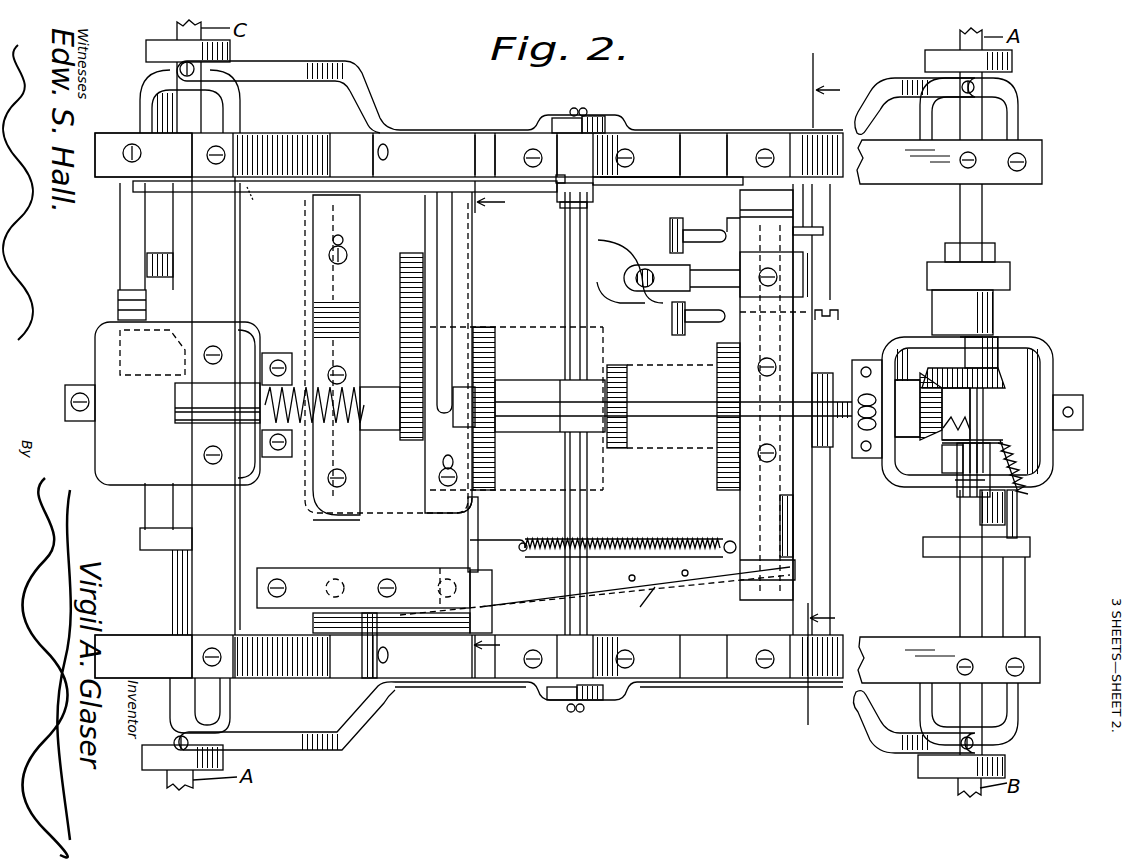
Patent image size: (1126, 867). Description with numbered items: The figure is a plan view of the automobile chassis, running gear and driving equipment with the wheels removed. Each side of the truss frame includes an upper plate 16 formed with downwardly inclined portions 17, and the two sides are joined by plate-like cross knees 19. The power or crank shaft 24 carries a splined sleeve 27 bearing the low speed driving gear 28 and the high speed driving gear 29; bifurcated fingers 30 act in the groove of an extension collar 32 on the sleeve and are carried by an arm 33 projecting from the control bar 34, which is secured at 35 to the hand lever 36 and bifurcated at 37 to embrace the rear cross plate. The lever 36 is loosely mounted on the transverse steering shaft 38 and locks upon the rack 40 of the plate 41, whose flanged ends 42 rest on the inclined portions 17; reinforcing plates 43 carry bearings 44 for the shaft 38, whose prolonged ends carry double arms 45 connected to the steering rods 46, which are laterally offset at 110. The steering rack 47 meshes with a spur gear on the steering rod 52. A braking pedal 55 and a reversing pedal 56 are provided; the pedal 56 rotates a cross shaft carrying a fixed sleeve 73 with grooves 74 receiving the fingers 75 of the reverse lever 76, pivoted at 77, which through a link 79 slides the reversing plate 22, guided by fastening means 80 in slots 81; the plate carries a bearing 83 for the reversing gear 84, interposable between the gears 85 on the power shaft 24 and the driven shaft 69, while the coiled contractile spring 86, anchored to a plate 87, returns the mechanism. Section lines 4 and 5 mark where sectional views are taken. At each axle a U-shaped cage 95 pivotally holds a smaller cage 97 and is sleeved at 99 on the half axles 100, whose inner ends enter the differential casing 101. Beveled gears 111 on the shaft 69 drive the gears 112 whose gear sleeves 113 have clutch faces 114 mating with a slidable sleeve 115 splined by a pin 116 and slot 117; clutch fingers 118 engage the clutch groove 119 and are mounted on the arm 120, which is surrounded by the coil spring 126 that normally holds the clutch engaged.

The section line 4— 4 is at (856, 86).
The section line 5— 5 is at (488, 429).
The upper truss plate 16 is at (112, 136).
The downwardly inclined portions 17 is at (308, 680).
The cross knees 19 is at (740, 203).
The sliding reversing plate 22 is at (330, 283).
The power shaft 24 is at (668, 410).
The sleeve 27 is at (527, 387).
The low speed driving gear 28 is at (615, 365).
The high speed driving gear 29 is at (487, 327).
The bifurcated fingers 30 is at (447, 423).
The extension collar 32 is at (467, 393).
The arm 33 is at (443, 280).
The control bar 34 is at (397, 192).
The securing point 35 is at (560, 204).
The hand lever 36 is at (593, 192).
The bifurcated end 37 is at (263, 206).
The transverse steering shaft 38 is at (580, 508).
The rack 40 is at (620, 180).
The control lever plate 41 is at (688, 157).
The angularly flanged ends 42 is at (393, 157).
The reinforcing plates 43 is at (507, 150).
The bearings 44 is at (580, 157).
The double arms 45 is at (578, 110).
The steering rods 46 is at (448, 130).
The steering rack 47 is at (600, 270).
The steering rod 52 is at (623, 290).
The braking pedal 55 is at (668, 233).
The reversing pedal 56 is at (670, 327).
The driven shaft 69 is at (847, 397).
The fixed sleeve 73 is at (807, 577).
The groove 74 is at (740, 590).
The fingers 75 is at (790, 557).
The reverse lever 76 is at (650, 607).
The pivot point 77 is at (283, 571).
The link 79 is at (377, 527).
The fastening means 80 is at (328, 255).
The slots 81 is at (335, 236).
The bearing 83 is at (337, 310).
The reversing gear 84 is at (400, 255).
The transmission gears 85 is at (390, 430).
The coiled contractile spring 86 is at (537, 537).
The plate 87 is at (480, 500).
The U-shaped cage 95 is at (962, 212).
The smaller cage 97 is at (970, 117).
The sleeves 99 is at (989, 303).
The half axles 100 is at (975, 337).
The differential casing 101 is at (1035, 367).
The lateral offset 110 is at (340, 52).
The beveled gears 111 is at (903, 427).
The bevel gears 112 is at (933, 368).
The gear sleeves 113 is at (965, 410).
The clutch faces 114 is at (972, 432).
The slidable clutch sleeve 115 is at (950, 450).
The pin 116 is at (957, 465).
The slot 117 is at (1012, 460).
The clutch fingers 118 is at (1003, 441).
The clutch groove 119 is at (942, 432).
The arm 120 is at (1020, 485).
The coil spring 126 is at (1023, 480).